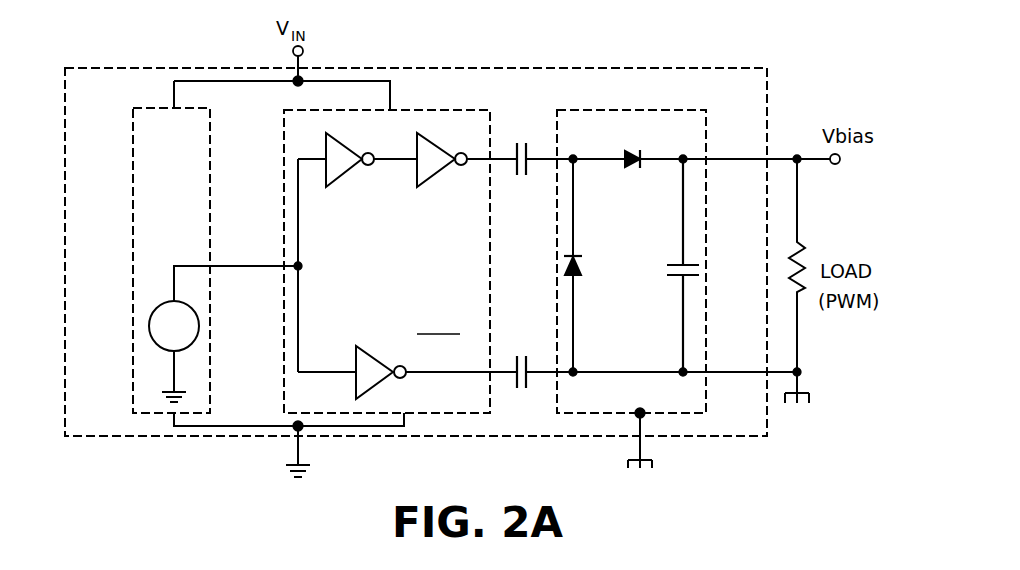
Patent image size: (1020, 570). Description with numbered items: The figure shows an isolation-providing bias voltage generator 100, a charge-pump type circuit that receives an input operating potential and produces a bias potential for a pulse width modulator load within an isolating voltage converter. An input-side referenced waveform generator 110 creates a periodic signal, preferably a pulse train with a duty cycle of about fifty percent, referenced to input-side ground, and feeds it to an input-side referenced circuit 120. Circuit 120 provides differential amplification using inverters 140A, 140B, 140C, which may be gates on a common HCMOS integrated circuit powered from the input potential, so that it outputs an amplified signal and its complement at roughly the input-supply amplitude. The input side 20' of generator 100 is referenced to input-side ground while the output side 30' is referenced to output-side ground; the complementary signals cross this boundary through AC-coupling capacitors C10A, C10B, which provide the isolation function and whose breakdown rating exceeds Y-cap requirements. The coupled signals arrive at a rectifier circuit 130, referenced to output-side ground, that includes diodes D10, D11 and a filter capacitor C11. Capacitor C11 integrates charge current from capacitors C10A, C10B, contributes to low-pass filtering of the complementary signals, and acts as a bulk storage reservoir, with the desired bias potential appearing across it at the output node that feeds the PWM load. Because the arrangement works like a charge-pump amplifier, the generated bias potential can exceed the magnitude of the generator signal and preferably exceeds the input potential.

The bias voltage generator 100 is at (775, 90).
The waveform generator 110 is at (220, 248).
The input-side referenced circuit 120 is at (367, 256).
The rectifier circuit 130 is at (677, 289).
The inverter 140A is at (352, 175).
The inverter 140B is at (446, 172).
The inverter 140C is at (377, 350).
The input side 20' is at (460, 46).
The output side 30' is at (580, 46).
The AC-coupling capacitor C10A is at (530, 172).
The AC-coupling capacitor C10B is at (545, 340).
The filter capacitor C11 is at (664, 265).
The diode D10 is at (595, 265).
The diode D11 is at (629, 176).